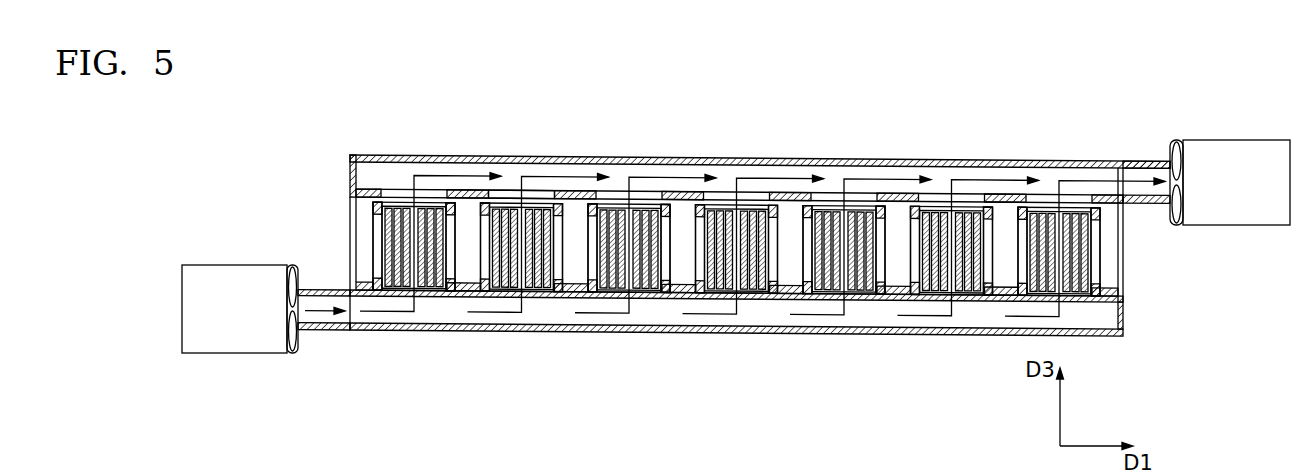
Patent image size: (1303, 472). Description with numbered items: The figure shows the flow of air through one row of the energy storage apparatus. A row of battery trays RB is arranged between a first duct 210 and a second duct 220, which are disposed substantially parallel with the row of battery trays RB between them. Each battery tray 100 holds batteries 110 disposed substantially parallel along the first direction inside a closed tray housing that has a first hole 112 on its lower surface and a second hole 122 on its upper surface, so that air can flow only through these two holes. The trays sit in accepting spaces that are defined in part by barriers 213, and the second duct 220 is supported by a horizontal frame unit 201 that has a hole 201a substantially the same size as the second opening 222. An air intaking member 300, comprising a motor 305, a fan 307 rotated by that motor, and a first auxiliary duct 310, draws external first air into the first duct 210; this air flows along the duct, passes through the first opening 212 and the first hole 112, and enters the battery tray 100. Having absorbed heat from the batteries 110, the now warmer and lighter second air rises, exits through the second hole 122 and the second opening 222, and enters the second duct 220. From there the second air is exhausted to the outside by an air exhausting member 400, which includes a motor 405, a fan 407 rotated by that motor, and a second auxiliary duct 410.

The battery tray 100 is at (687, 241).
The batteries 110 is at (656, 203).
The first hole 112 is at (398, 291).
The second hole 122 is at (390, 200).
The horizontal frame unit 201 is at (352, 197).
The hole 201a is at (540, 192).
The first duct 210 is at (610, 331).
The first opening 212 is at (437, 298).
The barrier 213 is at (572, 297).
The second duct 220 is at (990, 160).
The second opening 222 is at (430, 200).
The air intaking member 300 is at (285, 355).
The motor 305 is at (248, 343).
The fan 307 is at (297, 353).
The first auxiliary duct 310 is at (343, 347).
The air exhausting member 400 is at (1181, 143).
The motor 405 is at (1236, 163).
The fan 407 is at (1170, 142).
The second auxiliary duct 410 is at (1140, 160).
The row of battery trays RB is at (1138, 265).